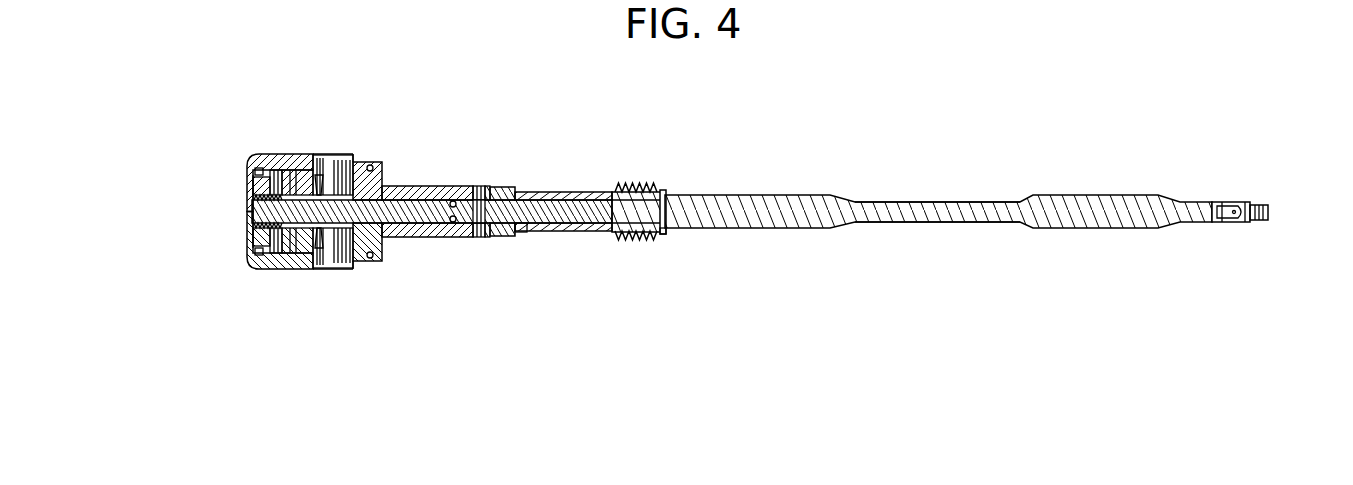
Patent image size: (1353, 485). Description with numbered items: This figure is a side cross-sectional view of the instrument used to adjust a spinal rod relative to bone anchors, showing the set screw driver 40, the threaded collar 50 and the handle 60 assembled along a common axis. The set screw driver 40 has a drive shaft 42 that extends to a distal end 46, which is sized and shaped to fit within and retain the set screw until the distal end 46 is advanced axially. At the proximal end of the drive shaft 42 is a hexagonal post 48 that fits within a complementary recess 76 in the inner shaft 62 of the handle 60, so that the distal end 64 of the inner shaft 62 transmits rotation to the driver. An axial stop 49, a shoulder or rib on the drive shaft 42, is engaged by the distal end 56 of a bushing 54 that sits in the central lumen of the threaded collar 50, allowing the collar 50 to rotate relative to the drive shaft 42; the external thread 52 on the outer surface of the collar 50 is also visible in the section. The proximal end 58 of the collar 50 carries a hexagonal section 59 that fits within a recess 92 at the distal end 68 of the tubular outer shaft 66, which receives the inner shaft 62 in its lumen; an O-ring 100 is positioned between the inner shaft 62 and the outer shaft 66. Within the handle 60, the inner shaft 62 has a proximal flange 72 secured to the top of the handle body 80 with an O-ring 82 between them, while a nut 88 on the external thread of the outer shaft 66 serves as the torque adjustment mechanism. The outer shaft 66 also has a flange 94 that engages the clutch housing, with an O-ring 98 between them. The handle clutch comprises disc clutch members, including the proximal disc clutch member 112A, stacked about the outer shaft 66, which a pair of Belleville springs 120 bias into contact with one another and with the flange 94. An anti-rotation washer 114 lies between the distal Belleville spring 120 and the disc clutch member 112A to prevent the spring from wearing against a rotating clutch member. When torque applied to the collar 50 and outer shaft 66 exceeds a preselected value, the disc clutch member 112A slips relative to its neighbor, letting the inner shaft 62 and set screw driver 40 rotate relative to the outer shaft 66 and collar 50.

The set screw driver 40 is at (835, 172).
The drive shaft 42 is at (905, 206).
The distal end 46 is at (1213, 184).
The post 48 is at (512, 191).
The axial stop 49 is at (663, 193).
The threaded collar 50 is at (581, 158).
The upper threads 52 is at (636, 183).
The bushing 54 is at (643, 233).
The distal end of bushing 56 is at (666, 232).
The proximal end of threaded collar 58 is at (520, 238).
The hexagonal section 59 is at (494, 238).
The handle 60 is at (371, 107).
The inner shaft 62 is at (417, 196).
The distal end of inner shaft 64 is at (472, 186).
The outer shaft 66 is at (415, 238).
The distal end of outer shaft 68 is at (489, 187).
The proximal flange 72 is at (250, 185).
The recess 76 is at (478, 186).
The handle body 80 is at (282, 157).
The O-ring 82 is at (259, 157).
The nut 88 is at (294, 157).
The recess 92 is at (475, 240).
The flange 94 is at (380, 162).
The O-ring 98 is at (372, 262).
The O-ring 100 is at (454, 187).
The disc clutch member 112A is at (338, 157).
The anti-rotation washer 114 is at (330, 250).
The Belleville springs 120 is at (318, 262).